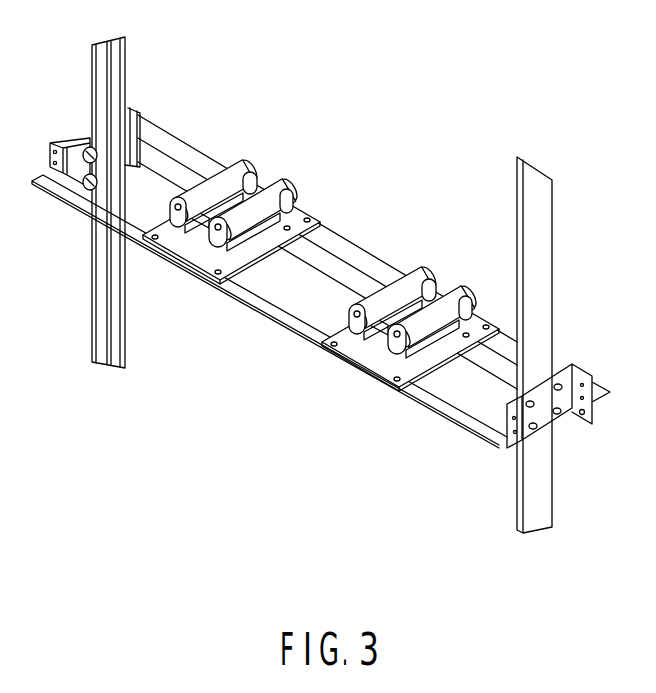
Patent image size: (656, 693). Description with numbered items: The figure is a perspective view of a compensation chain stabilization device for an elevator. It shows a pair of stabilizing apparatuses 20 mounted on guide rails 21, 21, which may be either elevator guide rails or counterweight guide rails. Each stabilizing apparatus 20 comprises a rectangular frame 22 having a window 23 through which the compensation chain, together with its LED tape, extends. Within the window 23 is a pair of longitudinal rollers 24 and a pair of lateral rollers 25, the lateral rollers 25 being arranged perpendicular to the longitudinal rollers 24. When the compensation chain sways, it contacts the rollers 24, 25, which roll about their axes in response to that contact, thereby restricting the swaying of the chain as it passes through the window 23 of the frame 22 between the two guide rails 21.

The stabilizing apparatus 20 is at (268, 158).
The guide rail 21 is at (127, 63).
The rectangular frame 22 is at (195, 265).
The window 23 is at (165, 188).
The longitudinal roller 24 is at (218, 180).
The lateral roller 25 is at (245, 193).